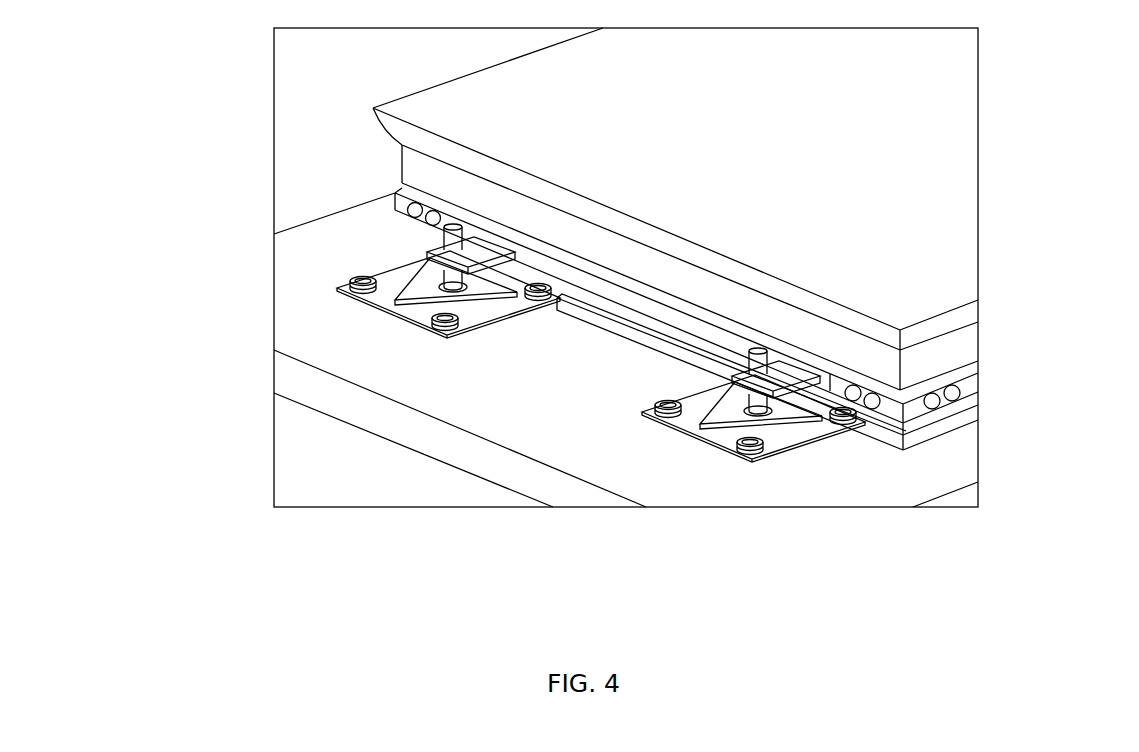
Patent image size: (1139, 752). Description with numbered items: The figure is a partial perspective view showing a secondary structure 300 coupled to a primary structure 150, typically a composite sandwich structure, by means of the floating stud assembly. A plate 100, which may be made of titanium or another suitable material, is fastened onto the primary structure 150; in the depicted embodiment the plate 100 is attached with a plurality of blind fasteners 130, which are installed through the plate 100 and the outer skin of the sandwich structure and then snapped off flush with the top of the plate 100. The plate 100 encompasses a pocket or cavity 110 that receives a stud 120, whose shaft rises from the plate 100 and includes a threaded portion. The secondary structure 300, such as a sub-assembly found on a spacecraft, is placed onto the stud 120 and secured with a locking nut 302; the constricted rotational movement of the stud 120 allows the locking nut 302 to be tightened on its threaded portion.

The secondary structure 300 is at (914, 198).
The locking nut 302 is at (428, 244).
The primary structure 150 is at (490, 410).
The plate 100 is at (787, 448).
The pocket or cavity 110 is at (712, 428).
The stud 120 is at (772, 399).
The blind fasteners 130 is at (745, 462).